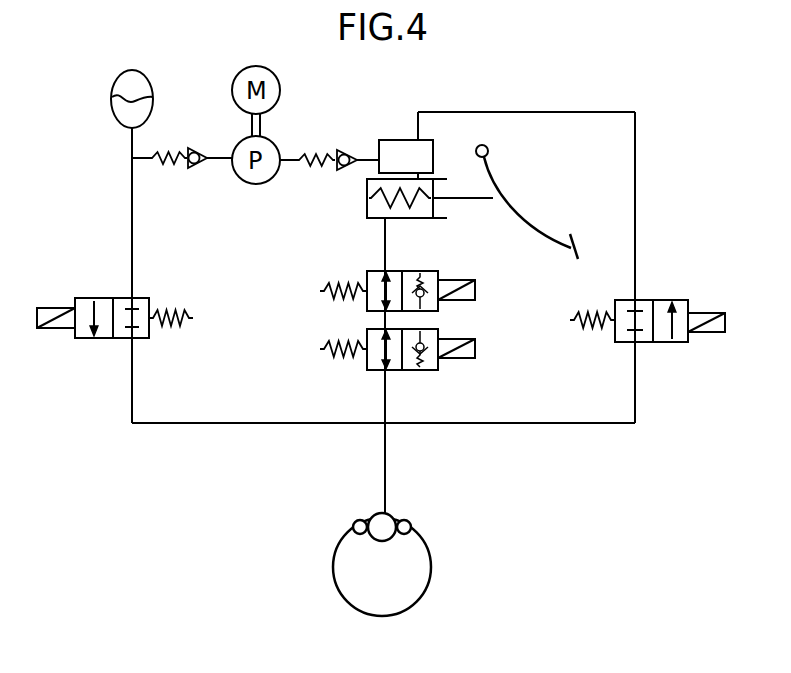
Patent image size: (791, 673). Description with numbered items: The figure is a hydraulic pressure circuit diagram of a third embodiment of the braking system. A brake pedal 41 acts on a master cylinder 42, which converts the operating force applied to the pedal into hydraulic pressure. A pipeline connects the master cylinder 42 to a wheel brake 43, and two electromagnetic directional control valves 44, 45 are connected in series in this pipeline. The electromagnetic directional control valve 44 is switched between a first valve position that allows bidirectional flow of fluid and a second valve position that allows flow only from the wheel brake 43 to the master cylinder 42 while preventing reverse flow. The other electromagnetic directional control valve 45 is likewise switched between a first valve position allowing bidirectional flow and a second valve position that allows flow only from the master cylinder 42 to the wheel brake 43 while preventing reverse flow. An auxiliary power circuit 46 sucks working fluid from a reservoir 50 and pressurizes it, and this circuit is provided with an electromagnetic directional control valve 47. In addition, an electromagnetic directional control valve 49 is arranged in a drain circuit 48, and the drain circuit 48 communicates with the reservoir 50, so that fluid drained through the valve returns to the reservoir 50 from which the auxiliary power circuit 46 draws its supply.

The brake pedal 41 is at (558, 240).
The master cylinder 42 is at (367, 205).
The wheel brake 43 is at (398, 517).
The electromagnetic directional control valve 44 is at (430, 271).
The electromagnetic directional control valve 45 is at (410, 371).
The auxiliary power circuit 46 is at (132, 233).
The electromagnetic directional control valve 47 is at (105, 340).
The drain circuit 48 is at (635, 168).
The electromagnetic directional control valve 49 is at (660, 300).
The reservoir 50 is at (403, 140).